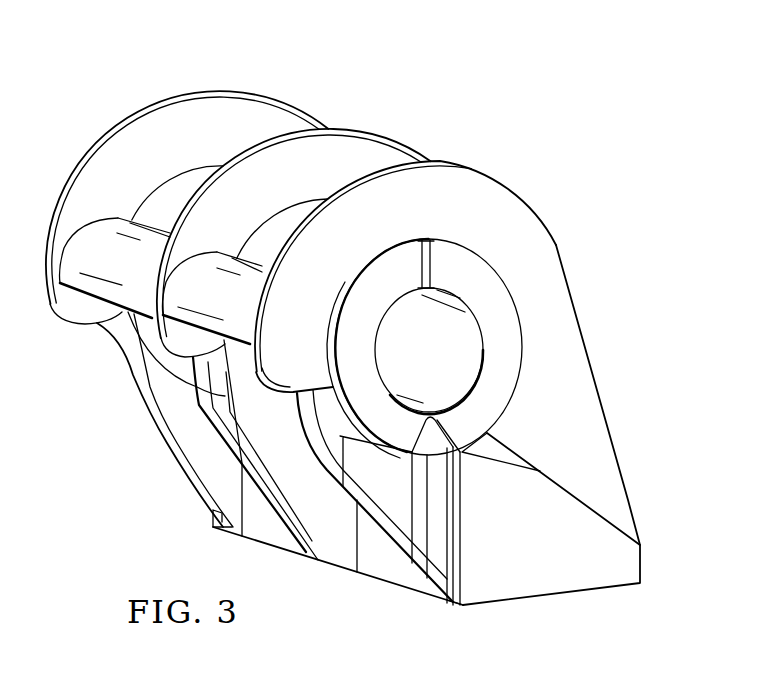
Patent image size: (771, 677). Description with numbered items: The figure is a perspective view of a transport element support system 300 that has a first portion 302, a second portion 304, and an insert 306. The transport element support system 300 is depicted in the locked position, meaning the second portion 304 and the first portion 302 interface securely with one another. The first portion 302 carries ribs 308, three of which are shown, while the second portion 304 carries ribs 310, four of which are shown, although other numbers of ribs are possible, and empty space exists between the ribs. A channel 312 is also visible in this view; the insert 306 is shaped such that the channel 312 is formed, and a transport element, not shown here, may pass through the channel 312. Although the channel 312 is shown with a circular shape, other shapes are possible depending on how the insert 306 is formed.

The transport element support system 300 is at (575, 87).
The first portion 302 is at (608, 422).
The second portion 304 is at (380, 577).
The insert 306 is at (505, 328).
The ribs 308 is at (162, 100).
The ribs 310 is at (162, 441).
The channel 312 is at (462, 358).